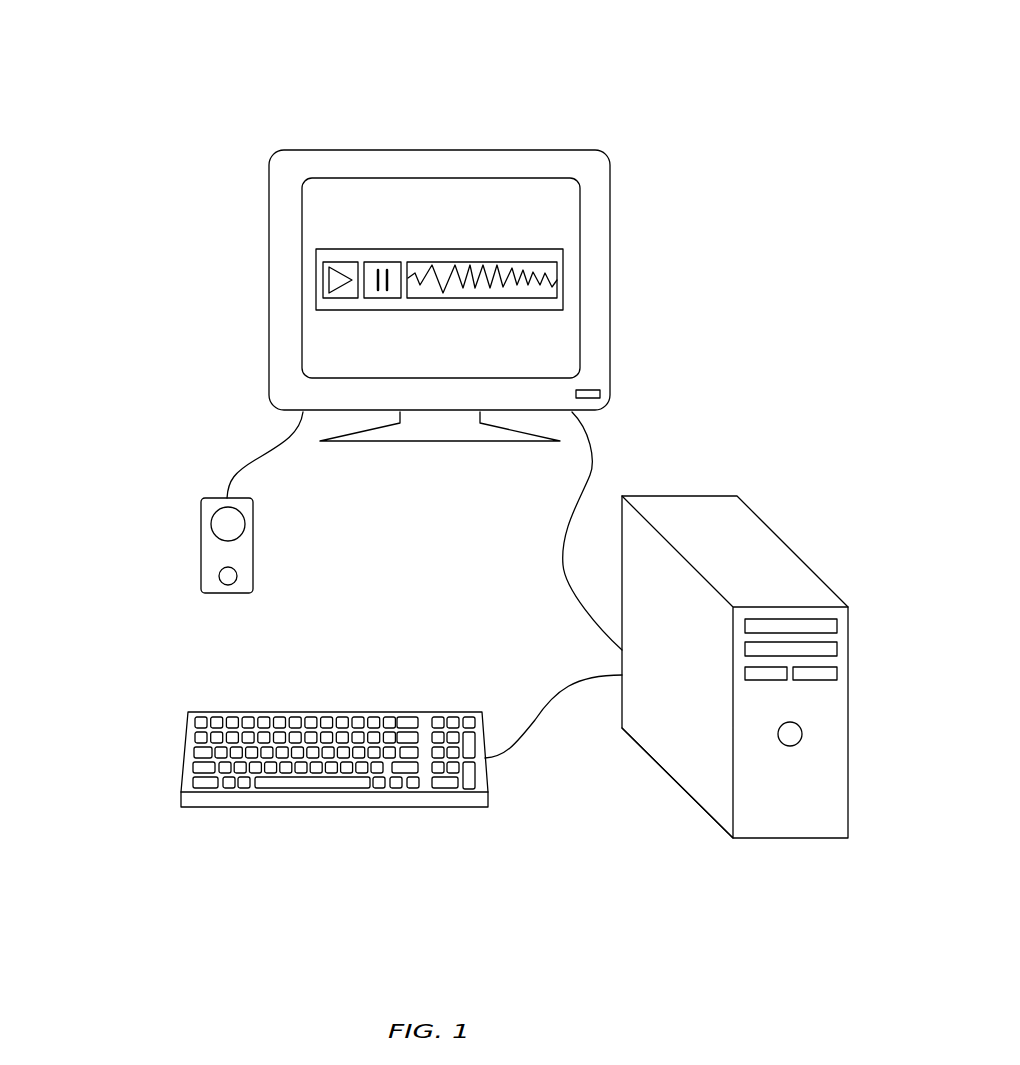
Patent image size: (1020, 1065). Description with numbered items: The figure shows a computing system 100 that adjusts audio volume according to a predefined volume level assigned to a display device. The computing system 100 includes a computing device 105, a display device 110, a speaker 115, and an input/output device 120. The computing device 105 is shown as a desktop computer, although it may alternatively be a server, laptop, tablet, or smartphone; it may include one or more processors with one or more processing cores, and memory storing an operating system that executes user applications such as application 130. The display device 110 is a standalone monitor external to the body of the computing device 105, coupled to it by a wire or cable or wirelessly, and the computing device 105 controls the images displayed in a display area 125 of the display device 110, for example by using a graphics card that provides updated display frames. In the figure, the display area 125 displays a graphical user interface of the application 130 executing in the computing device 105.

The computing system 100 is at (588, 68).
The computing device 105 is at (793, 850).
The display device 110 is at (398, 140).
The speaker 115 is at (227, 593).
The input/output device 120 is at (335, 807).
The display area 125 is at (580, 253).
The application 130 is at (370, 249).